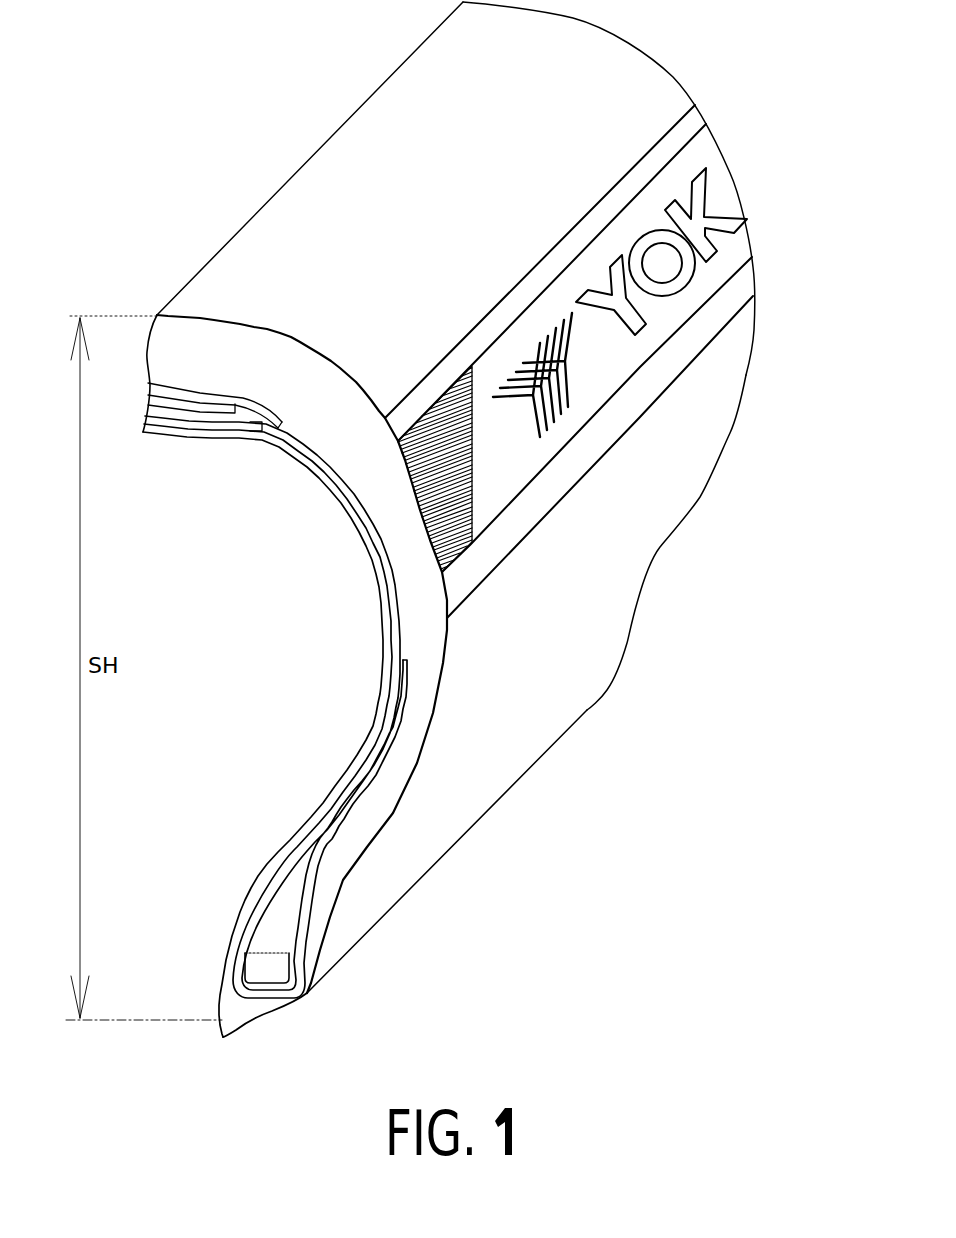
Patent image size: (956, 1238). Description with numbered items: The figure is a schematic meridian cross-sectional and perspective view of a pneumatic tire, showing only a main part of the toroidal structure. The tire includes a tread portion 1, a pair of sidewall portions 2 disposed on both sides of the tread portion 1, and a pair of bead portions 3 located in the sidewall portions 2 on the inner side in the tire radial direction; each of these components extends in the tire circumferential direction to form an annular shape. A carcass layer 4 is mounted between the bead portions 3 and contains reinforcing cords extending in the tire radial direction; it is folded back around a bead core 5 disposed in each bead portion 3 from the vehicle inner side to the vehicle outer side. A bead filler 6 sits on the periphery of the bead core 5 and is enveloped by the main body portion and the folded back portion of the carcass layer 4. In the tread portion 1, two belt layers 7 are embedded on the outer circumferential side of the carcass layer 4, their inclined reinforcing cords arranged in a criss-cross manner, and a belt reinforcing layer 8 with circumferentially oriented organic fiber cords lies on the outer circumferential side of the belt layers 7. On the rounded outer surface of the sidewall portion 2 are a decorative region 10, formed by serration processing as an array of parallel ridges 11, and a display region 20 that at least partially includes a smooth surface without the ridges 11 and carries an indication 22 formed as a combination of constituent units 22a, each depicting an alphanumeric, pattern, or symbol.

The tread portion 1 is at (205, 292).
The sidewall portion 2 is at (468, 643).
The bead portion 3 is at (340, 967).
The carcass layer 4 is at (398, 630).
The bead core 5 is at (262, 972).
The bead filler 6 is at (282, 937).
The belt layer 7 is at (190, 403).
The belt reinforcing layer 8 is at (257, 407).
The decorative region 10 is at (466, 557).
The ridge 11 is at (407, 460).
The display region 20 is at (546, 467).
The indication 22 is at (721, 224).
The constituent unit 22a is at (642, 328).